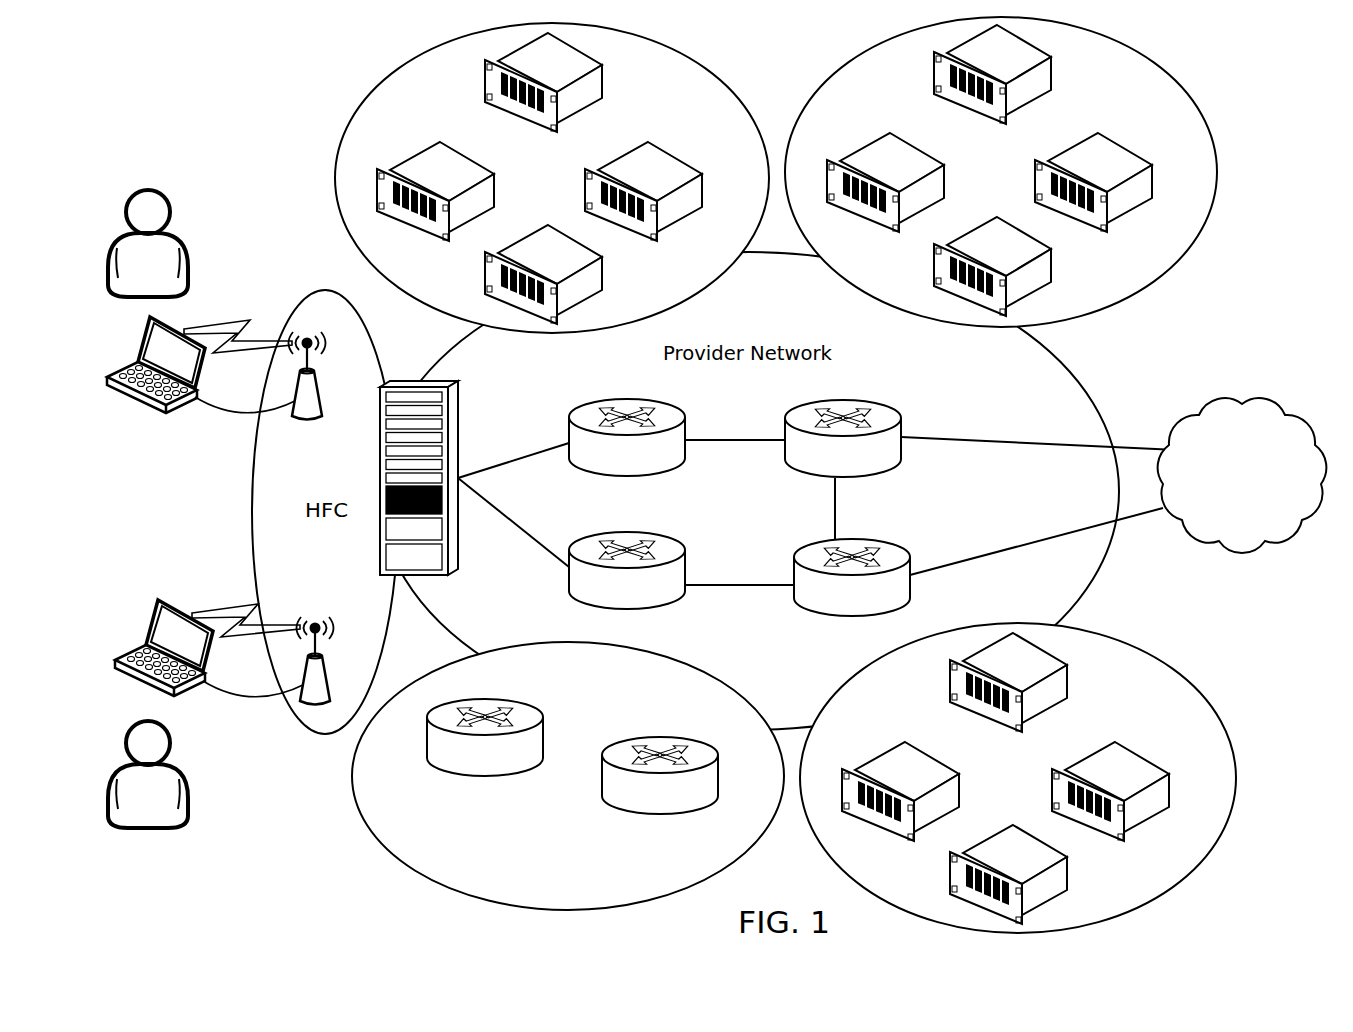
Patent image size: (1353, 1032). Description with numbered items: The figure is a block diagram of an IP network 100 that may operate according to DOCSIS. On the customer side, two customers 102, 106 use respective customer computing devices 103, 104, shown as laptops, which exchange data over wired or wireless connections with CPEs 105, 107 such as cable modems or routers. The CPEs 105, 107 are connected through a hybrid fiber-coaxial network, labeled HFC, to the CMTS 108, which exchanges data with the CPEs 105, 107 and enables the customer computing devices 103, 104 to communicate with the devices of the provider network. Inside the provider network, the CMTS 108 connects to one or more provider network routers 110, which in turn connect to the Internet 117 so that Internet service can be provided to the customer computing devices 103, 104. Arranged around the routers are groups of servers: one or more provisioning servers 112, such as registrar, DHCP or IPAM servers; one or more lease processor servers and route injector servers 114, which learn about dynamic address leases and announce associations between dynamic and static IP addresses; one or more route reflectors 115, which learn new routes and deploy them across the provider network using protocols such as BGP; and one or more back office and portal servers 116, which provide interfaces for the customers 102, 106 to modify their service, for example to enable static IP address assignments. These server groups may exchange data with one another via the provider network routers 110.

The IP network 100 is at (241, 124).
The customer 102 is at (163, 273).
The customer computing device 103 is at (168, 390).
The customer computing device 104 is at (159, 622).
The CPE 105 is at (263, 674).
The customer 106 is at (163, 808).
The CPE 107 is at (278, 395).
The CMTS 108 is at (465, 469).
The provider network routers 110 is at (900, 420).
The provisioning servers 112 is at (561, 184).
The lease processor servers and route injector servers 114 is at (1010, 181).
The route reflectors 115 is at (595, 848).
The back office and portal servers 116 is at (1026, 783).
The Internet 117 is at (1256, 516).